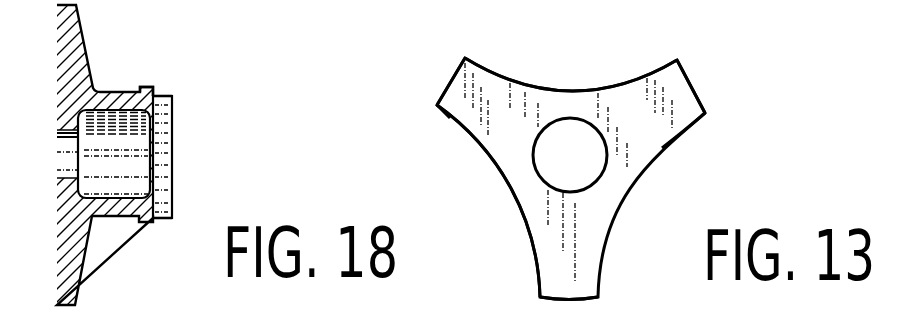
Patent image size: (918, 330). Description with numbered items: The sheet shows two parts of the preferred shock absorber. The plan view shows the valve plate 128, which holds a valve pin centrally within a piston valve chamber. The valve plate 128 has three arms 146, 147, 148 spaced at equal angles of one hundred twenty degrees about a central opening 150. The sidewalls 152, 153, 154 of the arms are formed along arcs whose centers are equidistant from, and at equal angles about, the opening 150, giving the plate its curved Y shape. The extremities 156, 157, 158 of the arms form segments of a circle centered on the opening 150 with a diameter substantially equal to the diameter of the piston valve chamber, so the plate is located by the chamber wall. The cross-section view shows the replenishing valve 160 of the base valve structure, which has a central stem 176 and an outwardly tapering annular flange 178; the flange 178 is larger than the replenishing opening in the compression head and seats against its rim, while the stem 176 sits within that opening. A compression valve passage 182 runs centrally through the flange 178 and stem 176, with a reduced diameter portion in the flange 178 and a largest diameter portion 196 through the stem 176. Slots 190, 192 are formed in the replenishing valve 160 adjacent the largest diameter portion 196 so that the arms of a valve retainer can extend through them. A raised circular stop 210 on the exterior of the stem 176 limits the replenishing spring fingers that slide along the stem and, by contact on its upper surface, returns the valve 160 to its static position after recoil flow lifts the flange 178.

In FIG. 18, the annular flange 178 is at (70, 250).
In FIG. 18, the central stem 176 is at (97, 208).
In FIG. 18, the compression valve passage 182 is at (78, 160).
In FIG. 18, the raised circular stop 210 is at (139, 88).
In FIG. 18, the largest diameter portion of the passage 196 is at (163, 145).
In FIG. 18, the slot 190 is at (162, 103).
In FIG. 18, the replenishing valve 160 is at (176, 92).
In FIG. 18, the slot 192 is at (168, 208).
In FIG. 13, the arm 146 is at (680, 85).
In FIG. 13, the central opening 150 is at (535, 158).
In FIG. 13, the sidewall 154 is at (503, 85).
In FIG. 13, the extremity 158 is at (465, 58).
In FIG. 13, the arm 148 is at (458, 97).
In FIG. 13, the extremity 156 is at (678, 60).
In FIG. 13, the sidewall 152 is at (690, 123).
In FIG. 13, the valve plate 128 is at (640, 138).
In FIG. 13, the sidewall 153 is at (510, 177).
In FIG. 13, the arm 147 is at (558, 270).
In FIG. 13, the extremity 157 is at (572, 301).